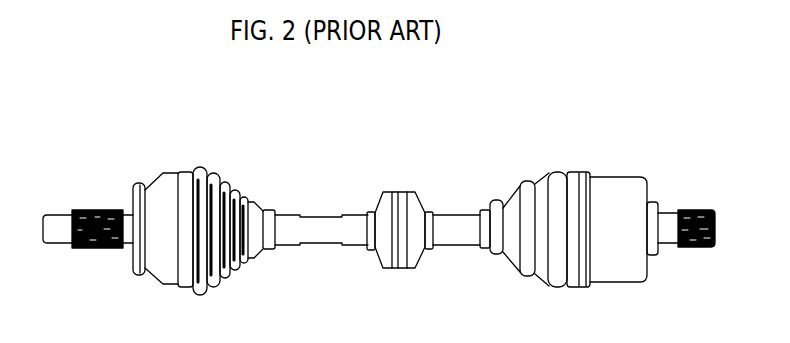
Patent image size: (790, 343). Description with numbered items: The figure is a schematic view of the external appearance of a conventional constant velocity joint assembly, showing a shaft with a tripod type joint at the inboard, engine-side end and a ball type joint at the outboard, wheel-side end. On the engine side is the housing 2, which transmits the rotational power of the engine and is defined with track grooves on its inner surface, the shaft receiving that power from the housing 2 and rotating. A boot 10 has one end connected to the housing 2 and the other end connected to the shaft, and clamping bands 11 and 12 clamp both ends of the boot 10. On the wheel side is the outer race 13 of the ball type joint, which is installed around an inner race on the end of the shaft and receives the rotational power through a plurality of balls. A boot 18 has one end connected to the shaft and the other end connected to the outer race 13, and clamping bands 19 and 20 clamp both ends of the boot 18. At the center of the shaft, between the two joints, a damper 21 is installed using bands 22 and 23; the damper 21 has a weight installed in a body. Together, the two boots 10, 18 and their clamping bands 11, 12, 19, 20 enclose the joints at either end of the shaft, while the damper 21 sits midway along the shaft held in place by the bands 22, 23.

The housing 2 is at (613, 182).
The boot 10 is at (513, 198).
The clamping band 11 is at (575, 172).
The clamping band 12 is at (482, 211).
The outer race 13 is at (165, 190).
The boot 18 is at (203, 173).
The clamping band 19 is at (272, 212).
The clamping band 20 is at (183, 182).
The damper 21 is at (395, 192).
The band 22 is at (367, 212).
The band 23 is at (429, 212).